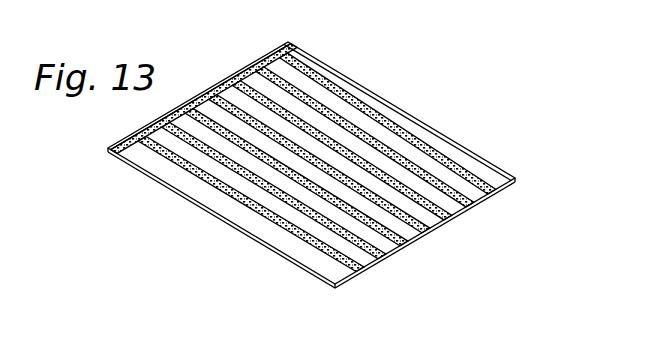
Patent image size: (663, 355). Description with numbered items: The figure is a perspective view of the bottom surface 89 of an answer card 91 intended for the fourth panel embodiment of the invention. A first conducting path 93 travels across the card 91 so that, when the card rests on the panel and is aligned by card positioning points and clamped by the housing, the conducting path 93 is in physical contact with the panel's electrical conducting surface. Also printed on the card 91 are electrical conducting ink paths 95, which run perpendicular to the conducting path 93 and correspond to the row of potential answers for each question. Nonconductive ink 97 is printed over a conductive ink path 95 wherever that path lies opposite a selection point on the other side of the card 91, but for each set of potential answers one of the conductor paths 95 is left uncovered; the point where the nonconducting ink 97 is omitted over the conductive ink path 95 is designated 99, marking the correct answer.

The bottom surface 89 is at (228, 207).
The answer card 91 is at (453, 136).
The first conducting path 93 is at (294, 48).
The electrical conducting ink paths 95 is at (318, 242).
The nonconductive ink 97 is at (207, 118).
The uncovered point 99 is at (272, 98).